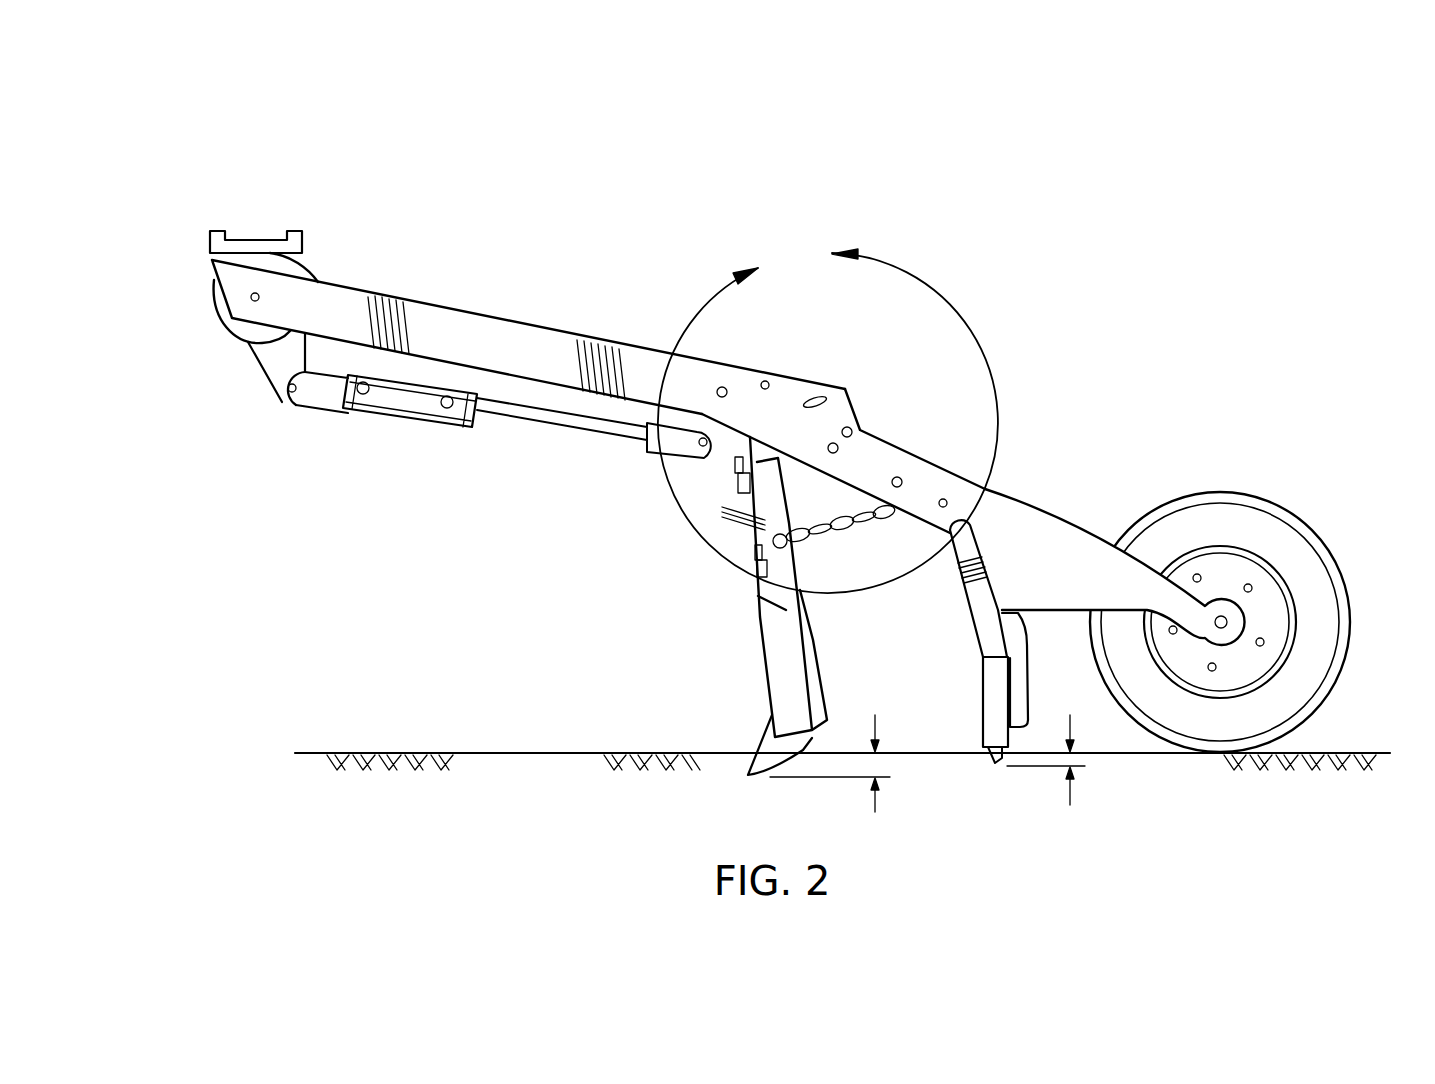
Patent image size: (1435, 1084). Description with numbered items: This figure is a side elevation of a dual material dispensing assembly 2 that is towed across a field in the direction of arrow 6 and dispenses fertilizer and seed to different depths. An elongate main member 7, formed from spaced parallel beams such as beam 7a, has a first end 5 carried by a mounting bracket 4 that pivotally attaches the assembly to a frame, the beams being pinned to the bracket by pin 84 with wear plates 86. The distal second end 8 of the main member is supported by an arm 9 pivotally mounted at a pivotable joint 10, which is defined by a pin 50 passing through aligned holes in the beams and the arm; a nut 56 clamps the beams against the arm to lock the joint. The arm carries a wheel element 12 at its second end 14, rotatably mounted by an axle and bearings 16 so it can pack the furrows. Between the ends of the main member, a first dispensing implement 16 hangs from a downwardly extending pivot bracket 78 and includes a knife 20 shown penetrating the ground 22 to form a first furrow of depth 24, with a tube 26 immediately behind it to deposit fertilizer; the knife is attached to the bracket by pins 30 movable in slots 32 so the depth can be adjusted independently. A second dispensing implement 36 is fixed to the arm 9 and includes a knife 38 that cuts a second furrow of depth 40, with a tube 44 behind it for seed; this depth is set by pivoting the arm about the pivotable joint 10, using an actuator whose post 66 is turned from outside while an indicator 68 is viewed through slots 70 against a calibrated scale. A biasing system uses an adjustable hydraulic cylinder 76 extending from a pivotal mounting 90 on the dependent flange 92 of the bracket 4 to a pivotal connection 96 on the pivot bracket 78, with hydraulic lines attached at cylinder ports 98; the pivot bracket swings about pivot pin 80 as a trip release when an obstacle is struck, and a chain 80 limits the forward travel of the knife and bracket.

The dual material dispensing assembly 2 is at (582, 272).
The bracket 4 is at (222, 247).
The first end 5 is at (230, 285).
The arrow 6 is at (340, 150).
The main member 7 is at (433, 320).
The beam 7a is at (507, 333).
The second end 8 is at (927, 483).
The arm 9 is at (1057, 533).
The pivotable joint 10 is at (897, 477).
The wheel element 12 is at (1248, 520).
The second end of the arm 14 is at (1227, 620).
The first dispensing implement / axle and bearings 16 is at (1227, 624).
The knife 20 is at (760, 765).
The ground 22 is at (402, 752).
The first depth 24 is at (877, 768).
The tube 26 is at (810, 675).
The pins 30 is at (737, 483).
The slots 32 is at (737, 503).
The second dispensing implement 36 is at (1044, 645).
The knife 38 is at (995, 757).
The second depth 40 is at (1078, 758).
The tube 44 is at (1018, 687).
The pin 50 is at (907, 470).
The nut 56 is at (987, 490).
The post 66 is at (831, 455).
The indicator 68 is at (813, 398).
The slots 70 is at (830, 388).
The hydraulic cylinder 76 is at (473, 413).
The pivot bracket 78 is at (740, 527).
The pivot pin / chain 80 is at (722, 387).
The pin 84 is at (259, 295).
The wear plates 86 is at (240, 328).
The pivotal mounting 90 is at (282, 398).
The dependent flange 92 is at (270, 358).
The pivotal connection 96 is at (699, 445).
The cylinder ports 98 is at (366, 394).